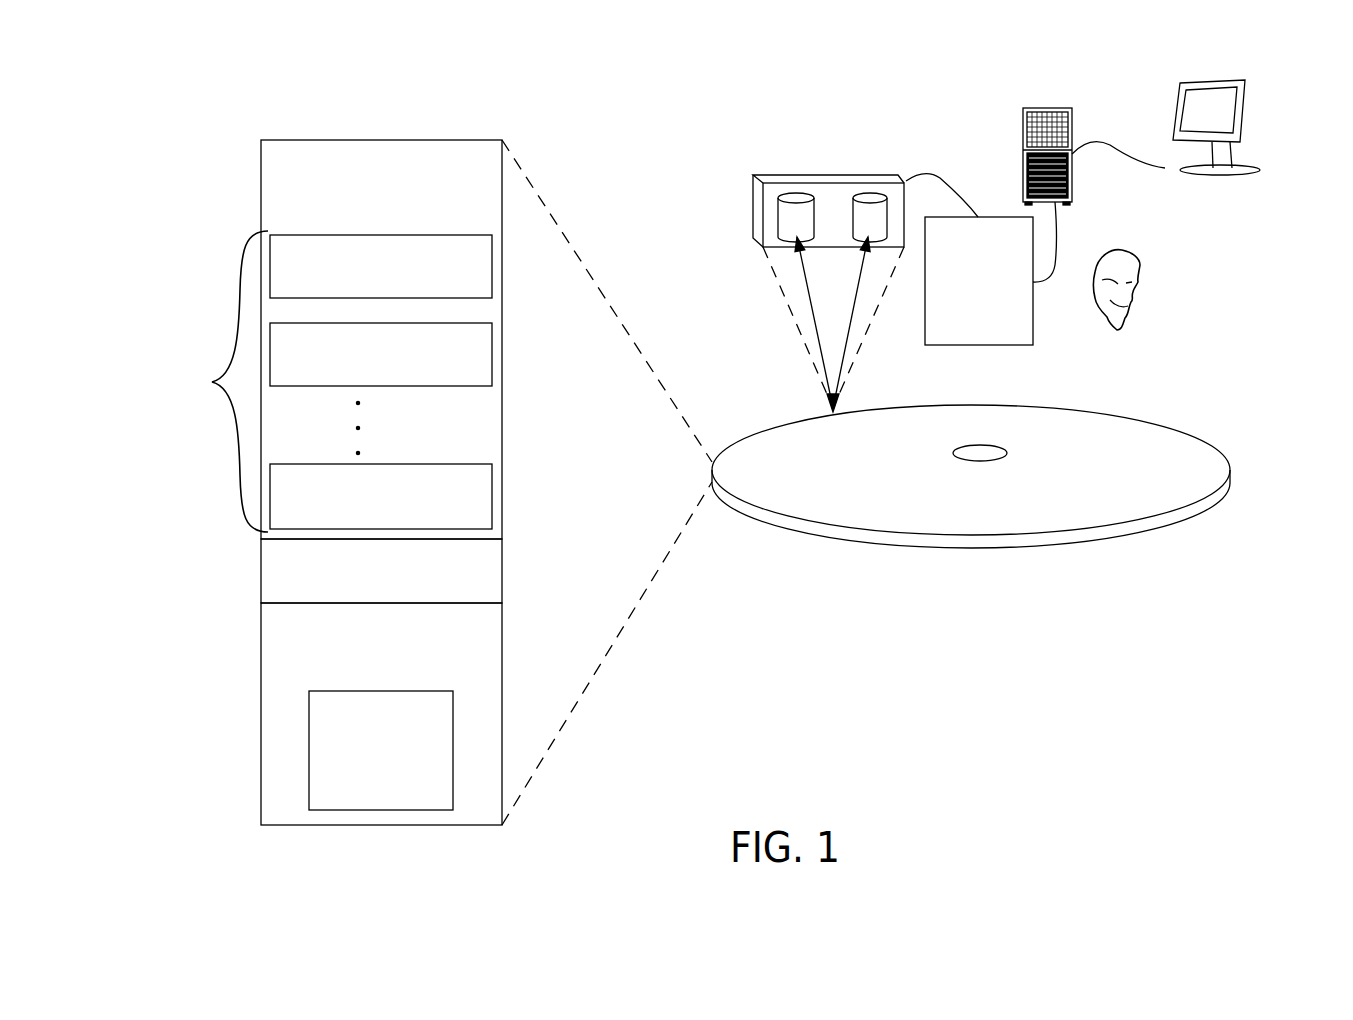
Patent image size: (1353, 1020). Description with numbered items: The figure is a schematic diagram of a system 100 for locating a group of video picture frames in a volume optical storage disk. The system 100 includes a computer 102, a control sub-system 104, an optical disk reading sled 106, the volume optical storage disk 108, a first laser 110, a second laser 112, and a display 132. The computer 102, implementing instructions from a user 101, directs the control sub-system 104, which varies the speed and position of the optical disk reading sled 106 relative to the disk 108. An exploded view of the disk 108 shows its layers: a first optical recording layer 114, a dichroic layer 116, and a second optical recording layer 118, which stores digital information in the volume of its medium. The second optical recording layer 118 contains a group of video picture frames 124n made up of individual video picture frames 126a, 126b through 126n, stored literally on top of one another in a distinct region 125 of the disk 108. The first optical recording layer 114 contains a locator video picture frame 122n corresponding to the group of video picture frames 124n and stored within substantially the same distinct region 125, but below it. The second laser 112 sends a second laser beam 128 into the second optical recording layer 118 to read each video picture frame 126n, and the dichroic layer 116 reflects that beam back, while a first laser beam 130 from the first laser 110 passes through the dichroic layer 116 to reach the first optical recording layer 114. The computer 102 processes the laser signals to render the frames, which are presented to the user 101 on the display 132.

The system 100 is at (238, 118).
The user 101 is at (1146, 300).
The computer 102 is at (1024, 120).
The control sub-system 104 is at (962, 321).
The optical disk reading sled 106 is at (895, 175).
The volume optical storage disk 108 is at (1135, 437).
The first laser 110 is at (868, 196).
The second laser 112 is at (795, 196).
The first optical recording layer 114 is at (365, 681).
The dichroic layer 116 is at (365, 595).
The second optical recording layer 118 is at (365, 220).
The locator video picture frame 122n is at (357, 795).
The group of video picture frames 124n is at (215, 381).
The distinct region 125 is at (830, 404).
The video picture frame 126a is at (358, 290).
The video picture frame 126b is at (358, 376).
The video picture frame 126n is at (358, 520).
The second laser beam 128 is at (806, 292).
The first laser beam 130 is at (851, 378).
The display 132 is at (1177, 115).